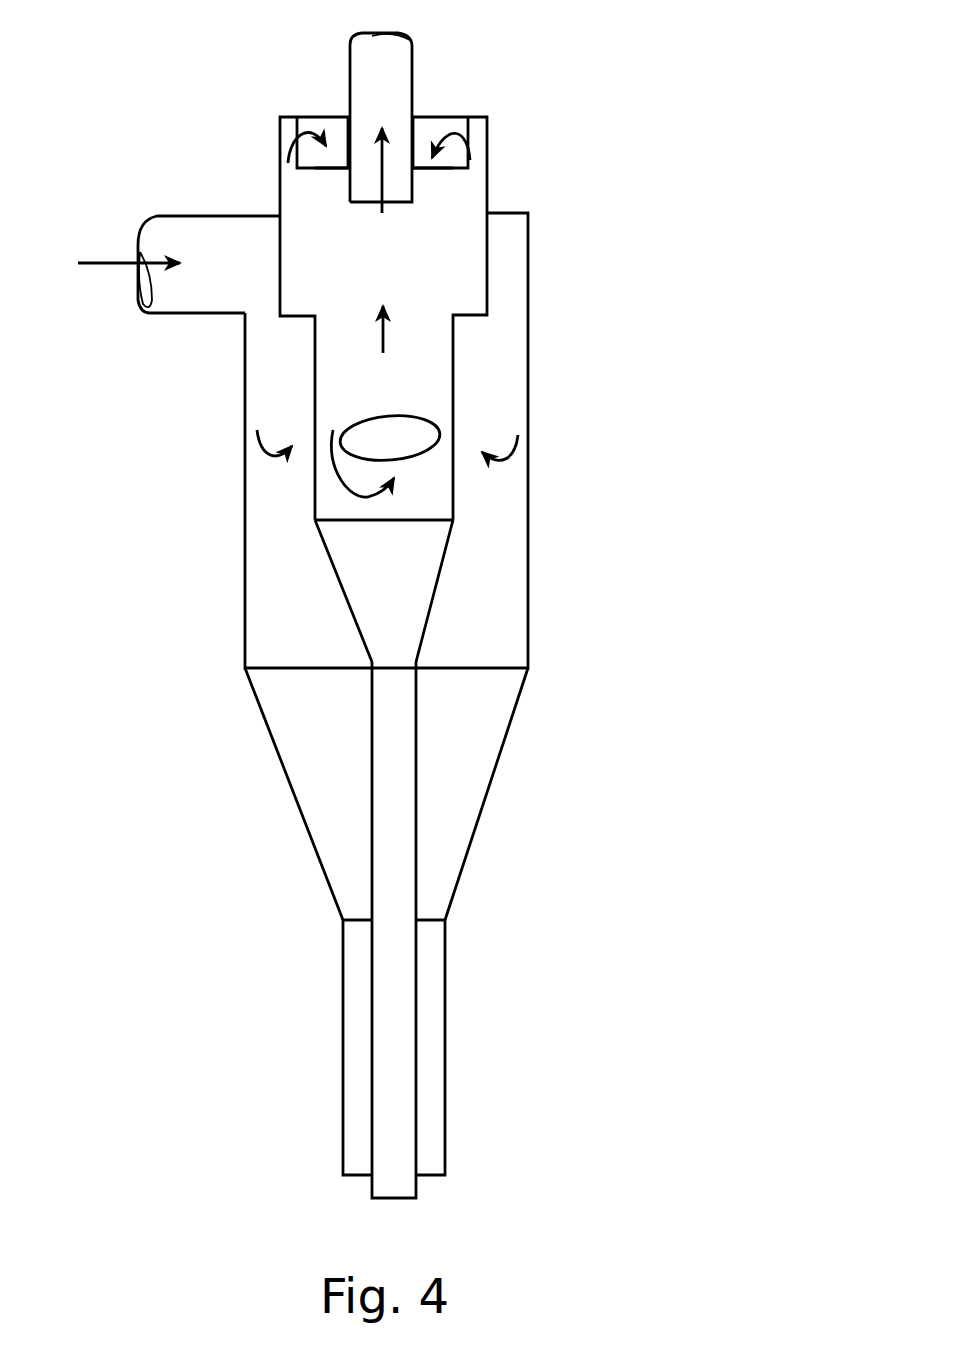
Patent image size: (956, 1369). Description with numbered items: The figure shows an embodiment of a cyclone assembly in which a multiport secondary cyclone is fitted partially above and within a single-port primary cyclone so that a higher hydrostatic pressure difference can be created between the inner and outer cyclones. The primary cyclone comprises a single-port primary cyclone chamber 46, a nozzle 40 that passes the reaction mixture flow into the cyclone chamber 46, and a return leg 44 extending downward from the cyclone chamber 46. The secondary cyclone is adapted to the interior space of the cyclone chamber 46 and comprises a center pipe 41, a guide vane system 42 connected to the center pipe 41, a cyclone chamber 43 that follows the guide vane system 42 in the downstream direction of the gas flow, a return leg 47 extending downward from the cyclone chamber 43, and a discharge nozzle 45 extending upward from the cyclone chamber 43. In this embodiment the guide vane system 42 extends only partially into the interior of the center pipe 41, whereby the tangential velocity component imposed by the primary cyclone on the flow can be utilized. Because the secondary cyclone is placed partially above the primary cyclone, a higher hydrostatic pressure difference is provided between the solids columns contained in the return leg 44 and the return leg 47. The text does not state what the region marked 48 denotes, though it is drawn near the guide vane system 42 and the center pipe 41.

The nozzle 40 is at (217, 240).
The center pipe 41 is at (474, 294).
The guide vane system 42 is at (462, 128).
The cyclone chamber 43 is at (457, 467).
The return leg 44 is at (443, 988).
The discharge nozzle 45 is at (392, 73).
The primary cyclone chamber 46 is at (530, 460).
The return leg 47 is at (412, 745).
The opening 48 is at (467, 168).